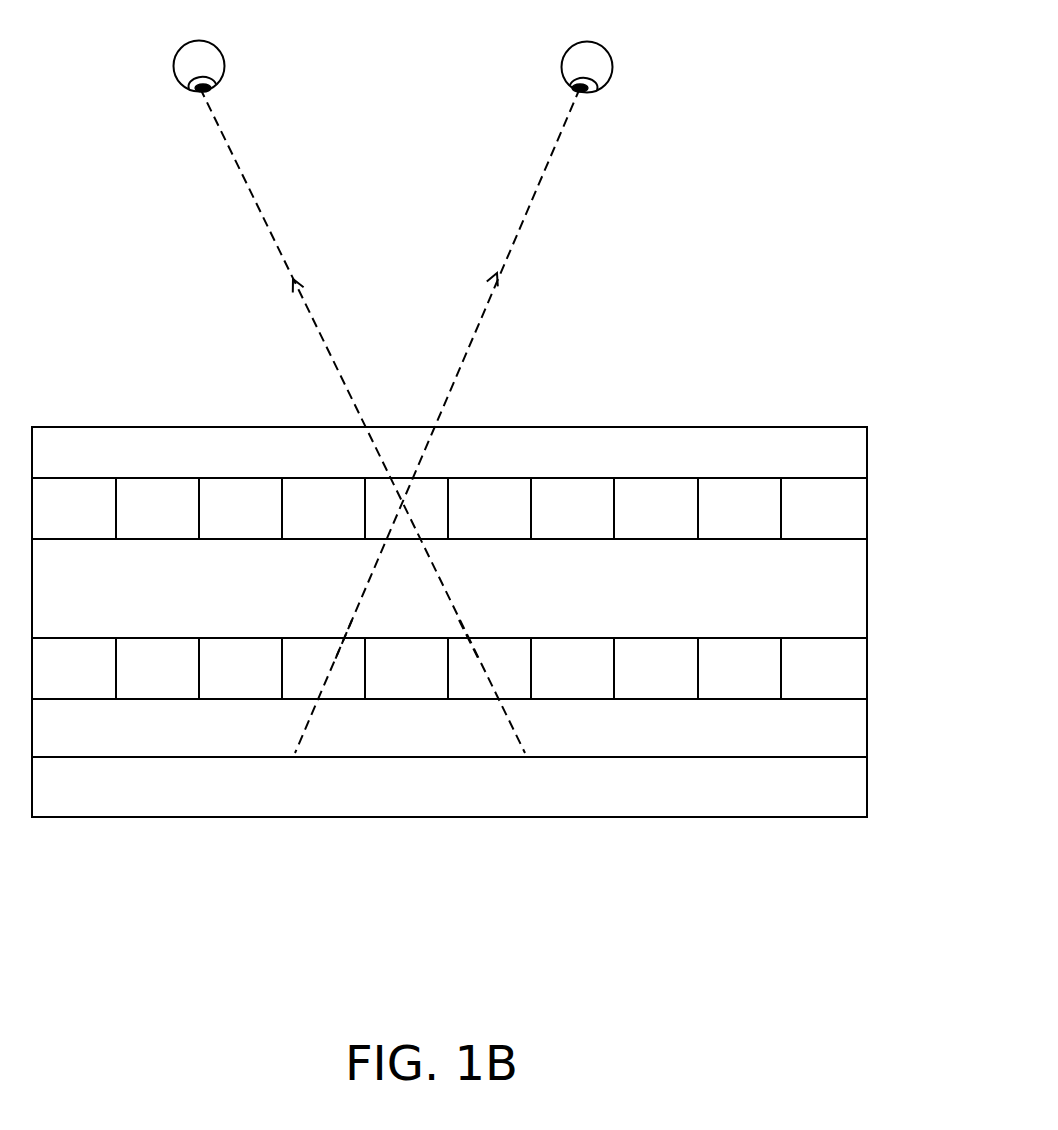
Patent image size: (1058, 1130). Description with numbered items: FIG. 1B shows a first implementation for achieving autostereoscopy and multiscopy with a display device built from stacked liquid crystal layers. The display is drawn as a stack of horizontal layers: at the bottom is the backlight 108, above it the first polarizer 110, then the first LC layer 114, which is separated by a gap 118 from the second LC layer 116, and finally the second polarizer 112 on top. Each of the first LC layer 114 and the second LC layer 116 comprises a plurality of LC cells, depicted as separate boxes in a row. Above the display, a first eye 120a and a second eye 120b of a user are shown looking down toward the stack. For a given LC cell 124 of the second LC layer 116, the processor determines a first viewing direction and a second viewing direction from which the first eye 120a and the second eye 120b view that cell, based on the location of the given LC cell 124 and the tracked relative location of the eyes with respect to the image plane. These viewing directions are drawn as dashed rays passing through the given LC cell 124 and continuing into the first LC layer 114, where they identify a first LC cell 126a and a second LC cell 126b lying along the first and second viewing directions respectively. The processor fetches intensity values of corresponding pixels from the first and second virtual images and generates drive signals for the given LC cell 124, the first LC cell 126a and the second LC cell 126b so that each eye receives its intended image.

The backlight 108 is at (808, 809).
The first polarizer 110 is at (808, 743).
The second polarizer 112 is at (808, 467).
The first LC layer 114 is at (808, 683).
The second LC layer 116 is at (808, 521).
The gap 118 is at (808, 600).
The first eye 120a is at (176, 70).
The second eye 120b is at (609, 70).
The given LC cell 124 is at (420, 537).
The first LC cell 126a is at (495, 640).
The second LC cell 126b is at (310, 638).